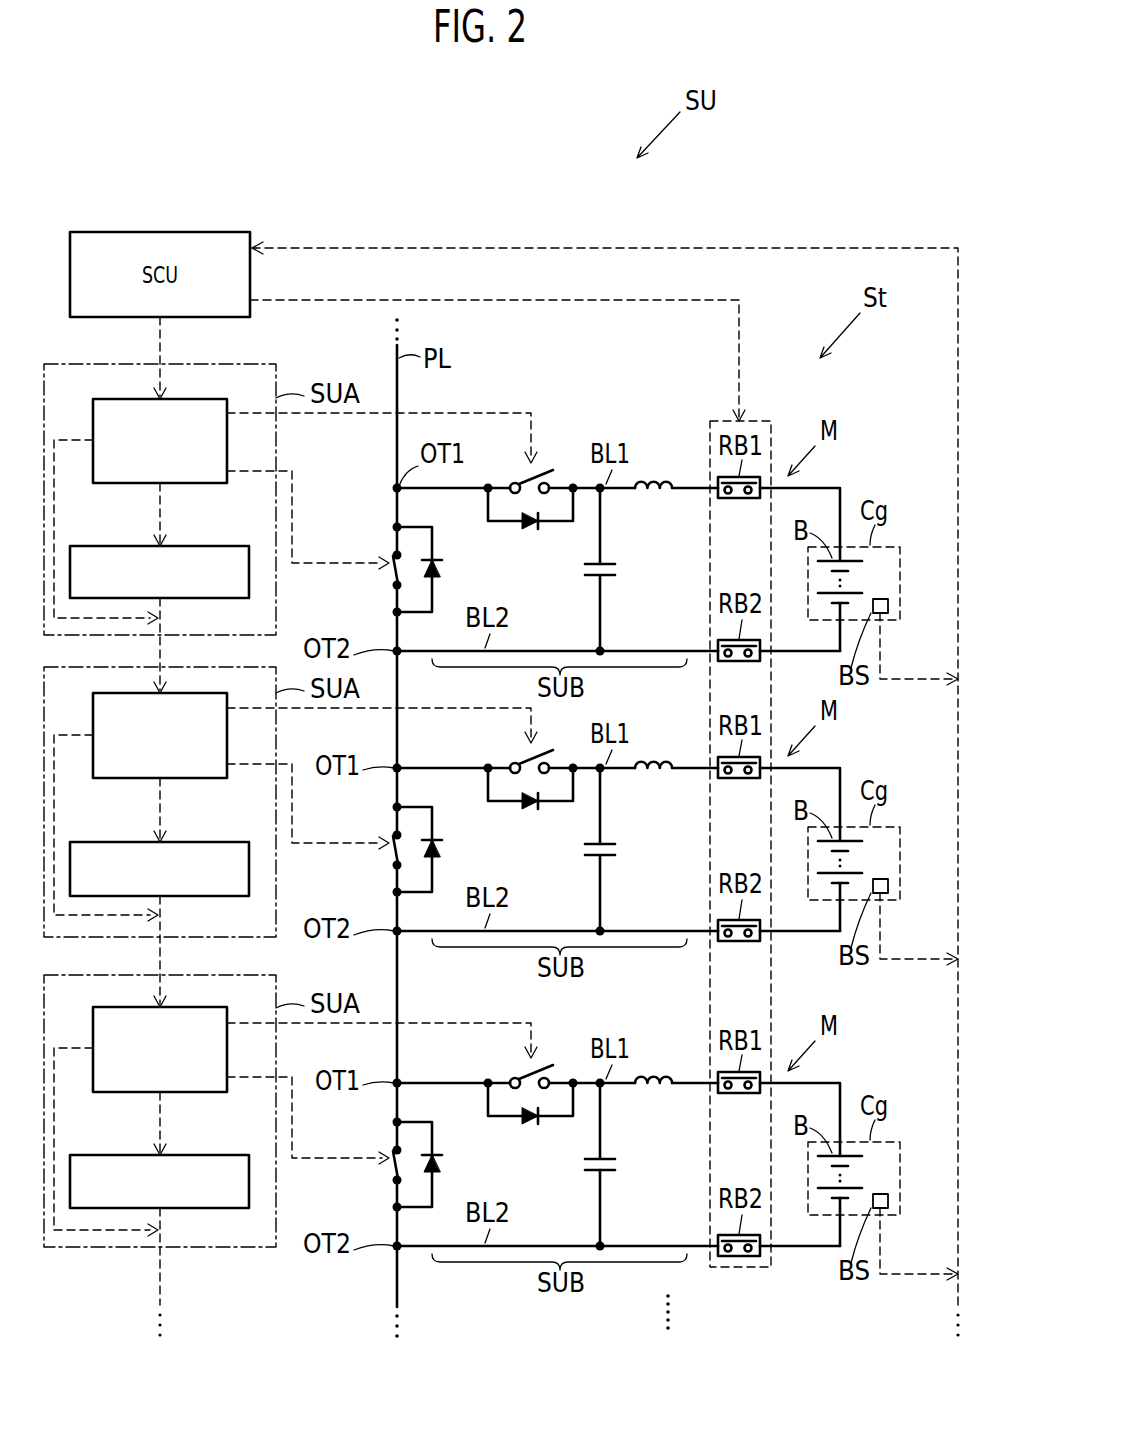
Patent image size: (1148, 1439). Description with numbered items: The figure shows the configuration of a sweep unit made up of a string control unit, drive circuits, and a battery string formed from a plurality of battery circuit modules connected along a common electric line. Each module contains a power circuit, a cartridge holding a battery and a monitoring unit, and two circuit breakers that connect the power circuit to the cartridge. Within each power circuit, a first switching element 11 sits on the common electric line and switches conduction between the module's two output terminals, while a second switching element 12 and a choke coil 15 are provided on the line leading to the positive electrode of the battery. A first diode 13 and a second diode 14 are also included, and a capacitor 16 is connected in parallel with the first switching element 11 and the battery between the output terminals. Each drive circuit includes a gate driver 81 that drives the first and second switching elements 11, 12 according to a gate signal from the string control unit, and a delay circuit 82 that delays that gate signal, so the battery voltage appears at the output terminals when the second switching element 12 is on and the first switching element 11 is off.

The first switching element 11 is at (393, 571).
The second switching element 12 is at (528, 480).
The first diode 13 is at (438, 566).
The second diode 14 is at (538, 526).
The choke coil 15 is at (657, 476).
The capacitor 16 is at (587, 594).
The gate driver 81 is at (190, 484).
The delay circuit 82 is at (89, 546).